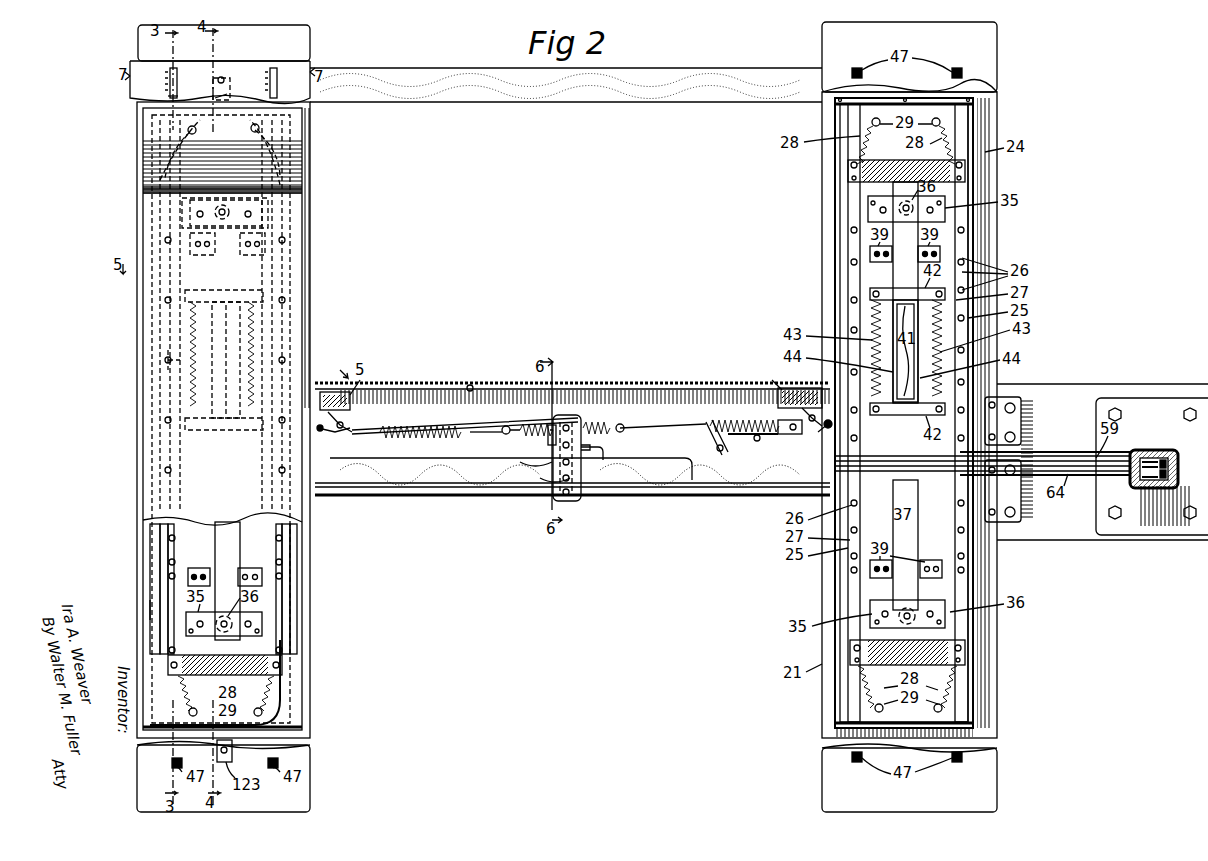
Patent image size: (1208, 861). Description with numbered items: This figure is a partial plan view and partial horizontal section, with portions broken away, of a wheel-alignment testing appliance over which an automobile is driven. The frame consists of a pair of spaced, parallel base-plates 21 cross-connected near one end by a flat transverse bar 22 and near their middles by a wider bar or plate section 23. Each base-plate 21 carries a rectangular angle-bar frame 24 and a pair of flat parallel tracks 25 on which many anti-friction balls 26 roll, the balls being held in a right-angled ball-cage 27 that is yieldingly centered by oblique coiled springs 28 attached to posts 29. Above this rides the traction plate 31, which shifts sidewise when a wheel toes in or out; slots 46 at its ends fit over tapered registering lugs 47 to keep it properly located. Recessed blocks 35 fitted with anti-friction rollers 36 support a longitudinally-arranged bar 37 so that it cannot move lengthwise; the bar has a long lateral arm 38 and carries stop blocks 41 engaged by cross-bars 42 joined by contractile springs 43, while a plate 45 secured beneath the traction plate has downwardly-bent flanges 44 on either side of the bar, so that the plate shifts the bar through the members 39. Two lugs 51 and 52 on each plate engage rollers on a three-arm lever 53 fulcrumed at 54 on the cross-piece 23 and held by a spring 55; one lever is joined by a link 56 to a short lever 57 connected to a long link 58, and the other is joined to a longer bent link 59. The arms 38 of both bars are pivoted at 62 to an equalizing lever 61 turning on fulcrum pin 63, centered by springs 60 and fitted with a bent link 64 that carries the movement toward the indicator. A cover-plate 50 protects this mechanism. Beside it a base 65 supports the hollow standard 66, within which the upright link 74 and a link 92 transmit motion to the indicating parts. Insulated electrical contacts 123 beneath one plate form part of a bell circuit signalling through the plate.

The base-plate 21 is at (310, 676).
The transverse bar or plate 22 is at (622, 98).
The second bar or plate section 23 is at (436, 383).
The angle-bar frame 24 is at (140, 222).
The track 25 is at (168, 568).
The anti-friction ball 26 is at (170, 538).
The ball-cage 27 is at (160, 528).
The coiled spring 28 is at (222, 157).
The post 29 is at (222, 147).
The traction plate 31 is at (190, 490).
The block 35 is at (268, 212).
The anti-friction roller 36 is at (312, 196).
The longitudinally-arranged bar 37 is at (215, 548).
The lateral extension or arm 38 is at (445, 475).
The member 39 is at (250, 568).
The stop or abutment block 41 is at (226, 360).
The cross-bar 42 is at (196, 440).
The contractile spring 43 is at (190, 340).
The flange 44 is at (190, 400).
The plate 45 is at (170, 370).
The slot 46 is at (178, 90).
The registering lug 47 is at (177, 70).
The cover-plate 50 is at (478, 388).
The lug 51 is at (322, 434).
The lug 52 is at (778, 390).
The three-arm lever 53 is at (348, 420).
The fulcrum 54 is at (328, 392).
The contractile spring 55 is at (425, 430).
The link 56 is at (748, 430).
The short lever 57 is at (712, 432).
The long link 58 is at (1072, 452).
The bent link 59 is at (492, 424).
The coiled spring 60 is at (553, 420).
The equalizing lever 61 is at (562, 415).
The pivotal connection 62 is at (556, 444).
The fulcrum pin 63 is at (560, 466).
The bent link 64 is at (600, 446).
The base 65 is at (1146, 396).
The hollow column or standard 66 is at (1154, 450).
The upright link 74 is at (1168, 462).
The link 92 is at (1165, 458).
The insulated electrical contact 123 is at (232, 78).